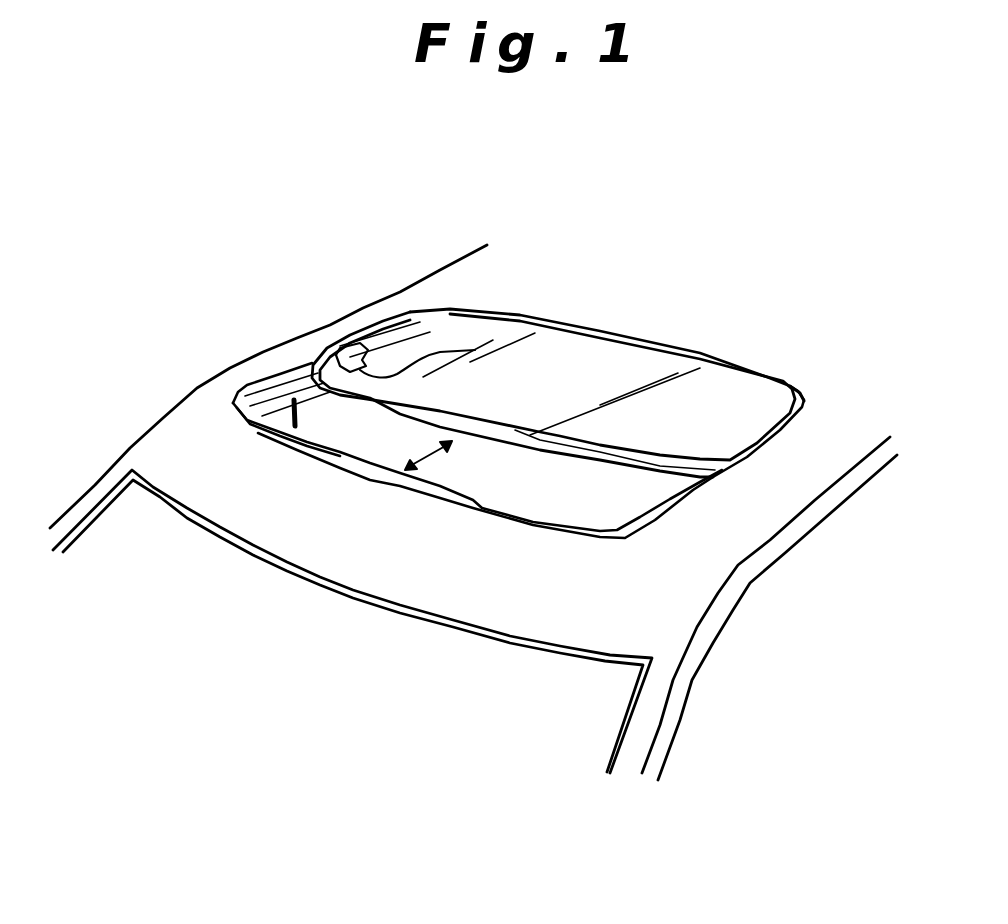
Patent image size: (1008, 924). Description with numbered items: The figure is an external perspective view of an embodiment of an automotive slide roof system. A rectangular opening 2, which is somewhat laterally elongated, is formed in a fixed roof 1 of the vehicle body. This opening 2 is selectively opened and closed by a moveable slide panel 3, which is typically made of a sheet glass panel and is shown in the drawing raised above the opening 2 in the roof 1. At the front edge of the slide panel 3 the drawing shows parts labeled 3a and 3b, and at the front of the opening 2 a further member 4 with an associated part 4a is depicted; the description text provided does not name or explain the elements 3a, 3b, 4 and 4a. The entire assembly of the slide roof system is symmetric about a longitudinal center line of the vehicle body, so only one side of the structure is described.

The fixed roof 1 is at (713, 555).
The rectangular opening 2 is at (652, 515).
The slide panel 3 is at (631, 358).
The panel front bracket 3a is at (345, 343).
The panel deflector dome 3b is at (440, 353).
The wind deflector 4 is at (294, 397).
The deflector link arm 4a is at (288, 390).